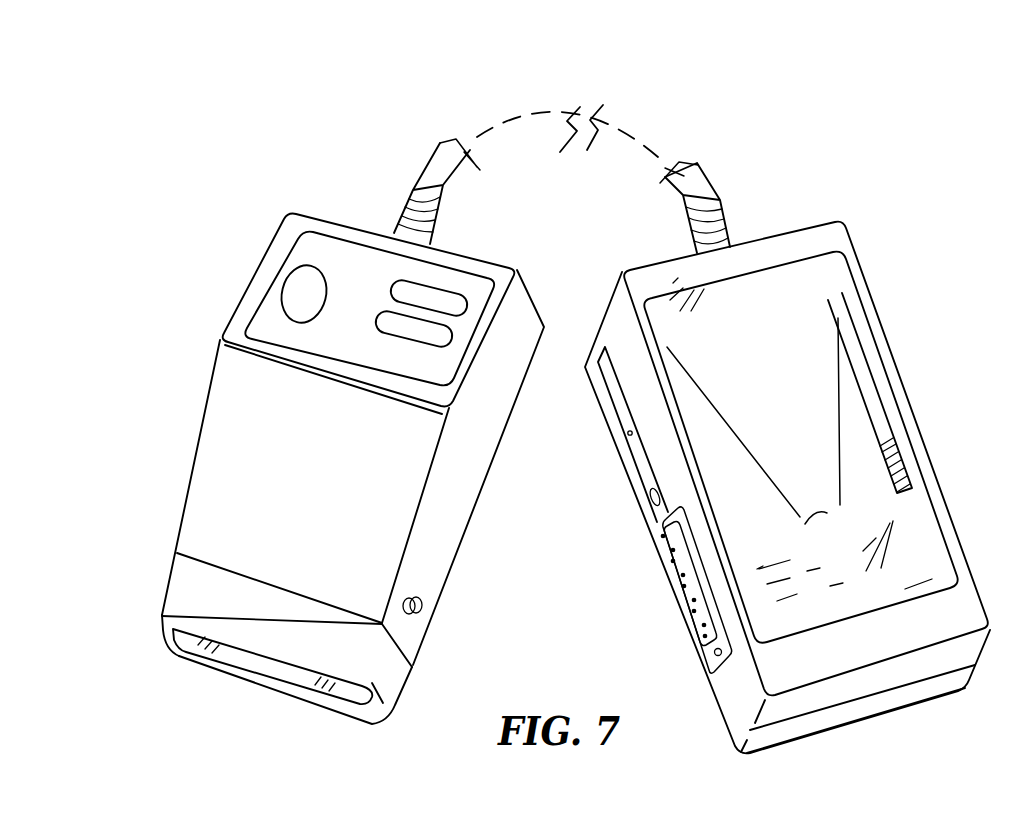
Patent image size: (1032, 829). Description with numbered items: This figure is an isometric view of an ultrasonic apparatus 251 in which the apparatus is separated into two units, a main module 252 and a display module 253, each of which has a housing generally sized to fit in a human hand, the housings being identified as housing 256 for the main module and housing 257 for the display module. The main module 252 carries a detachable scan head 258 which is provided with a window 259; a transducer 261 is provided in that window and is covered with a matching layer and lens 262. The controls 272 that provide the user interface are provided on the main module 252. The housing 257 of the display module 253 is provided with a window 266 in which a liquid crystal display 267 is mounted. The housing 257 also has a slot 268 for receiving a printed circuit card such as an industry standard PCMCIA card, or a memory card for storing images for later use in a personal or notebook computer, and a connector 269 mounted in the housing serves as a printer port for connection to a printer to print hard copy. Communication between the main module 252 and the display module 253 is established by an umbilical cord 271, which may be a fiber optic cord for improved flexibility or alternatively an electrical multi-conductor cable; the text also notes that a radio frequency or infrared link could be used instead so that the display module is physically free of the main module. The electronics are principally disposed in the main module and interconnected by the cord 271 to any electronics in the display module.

The ultrasonic apparatus 251 is at (416, 108).
The main module 252 is at (246, 264).
The display module 253 is at (856, 208).
The housing 256 is at (443, 537).
The housing 257 is at (897, 363).
The detachable scan head 258 is at (395, 685).
The window 259 is at (365, 722).
The transducer 261 is at (245, 667).
The matching layer and lens 262 is at (192, 657).
The window 266 is at (895, 455).
The liquid crystal display 267 is at (838, 352).
The slot 268 is at (628, 434).
The connector 269 is at (693, 625).
The umbilical cord 271 is at (697, 181).
The controls 272 is at (366, 262).